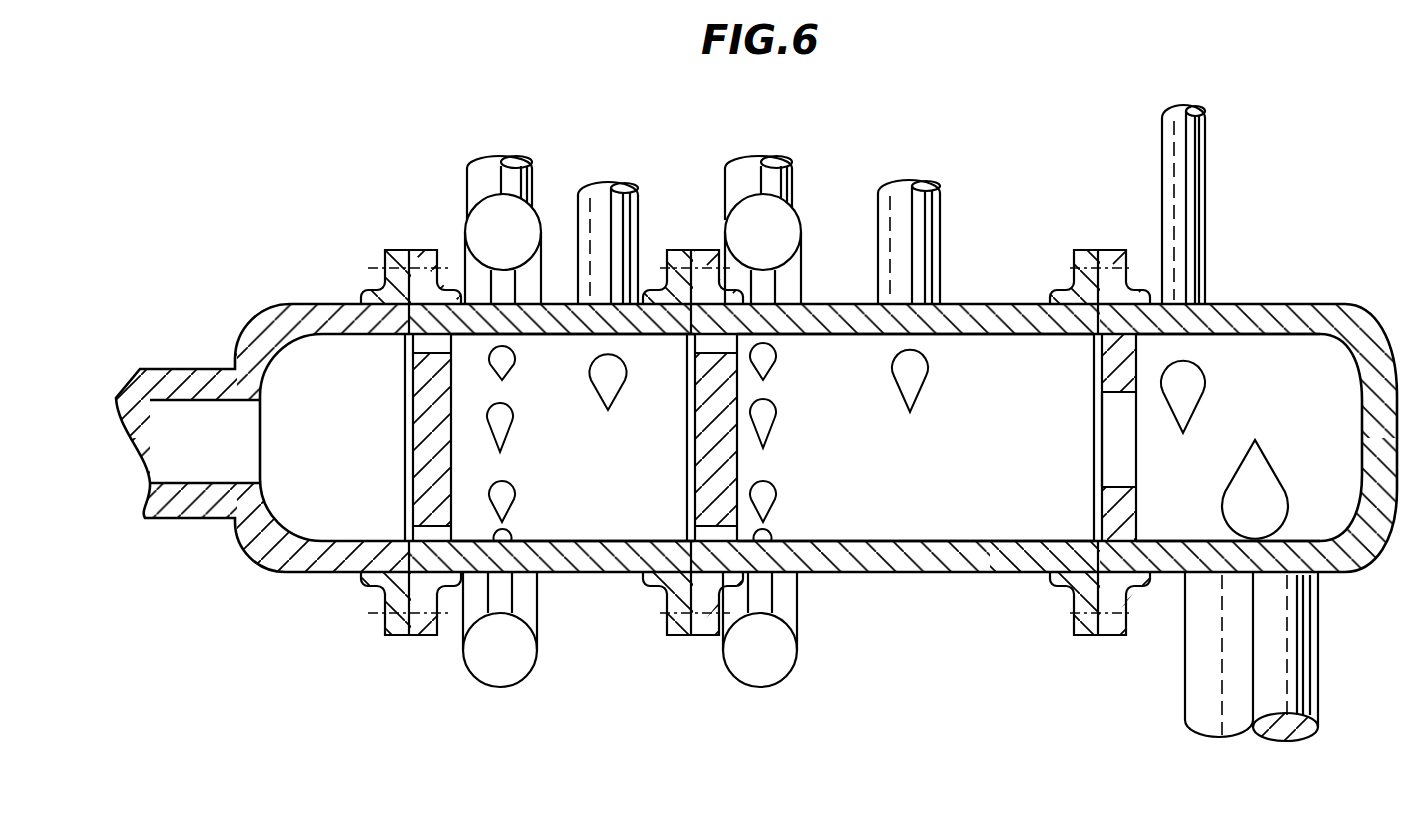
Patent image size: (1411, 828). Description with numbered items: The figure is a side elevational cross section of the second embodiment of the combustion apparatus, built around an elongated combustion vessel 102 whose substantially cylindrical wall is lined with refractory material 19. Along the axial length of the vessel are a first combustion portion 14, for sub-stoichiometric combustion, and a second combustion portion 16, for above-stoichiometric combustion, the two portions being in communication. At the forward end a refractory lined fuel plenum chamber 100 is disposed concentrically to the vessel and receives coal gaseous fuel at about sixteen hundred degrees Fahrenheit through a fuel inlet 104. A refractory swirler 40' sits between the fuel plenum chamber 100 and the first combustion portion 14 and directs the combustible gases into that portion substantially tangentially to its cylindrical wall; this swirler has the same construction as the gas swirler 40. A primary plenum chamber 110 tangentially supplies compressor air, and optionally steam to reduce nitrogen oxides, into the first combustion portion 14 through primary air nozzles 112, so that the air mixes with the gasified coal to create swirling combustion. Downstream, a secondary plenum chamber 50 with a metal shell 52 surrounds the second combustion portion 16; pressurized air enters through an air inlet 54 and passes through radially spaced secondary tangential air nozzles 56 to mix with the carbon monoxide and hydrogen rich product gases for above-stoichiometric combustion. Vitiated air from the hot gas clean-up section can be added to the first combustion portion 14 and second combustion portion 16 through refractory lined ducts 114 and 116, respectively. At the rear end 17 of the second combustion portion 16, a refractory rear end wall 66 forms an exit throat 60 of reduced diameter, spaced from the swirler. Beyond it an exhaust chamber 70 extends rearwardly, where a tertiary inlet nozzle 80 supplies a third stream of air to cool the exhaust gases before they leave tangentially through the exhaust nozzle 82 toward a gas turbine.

The first combustion portion 14 is at (562, 515).
The second combustion portion 16 is at (930, 490).
The rear end 17 is at (1085, 407).
The refractory material 19 is at (413, 630).
The gas swirler 40 is at (672, 442).
The refractory swirler 40' is at (371, 442).
The secondary plenum chamber 50 is at (757, 653).
The metal shell 52 is at (718, 600).
The air inlet 54 is at (775, 157).
The secondary tangential air nozzles 56 is at (764, 533).
The exit throat 60 is at (1110, 448).
The rear end wall 66 is at (1112, 513).
The exhaust chamber 70 is at (1200, 340).
The tertiary inlet nozzle 80 is at (1193, 225).
The exhaust nozzle 82 is at (1255, 495).
The fuel plenum chamber 100 is at (305, 500).
The elongated combustion vessel 102 is at (823, 580).
The fuel inlet 104 is at (155, 445).
The primary plenum chamber 110 is at (493, 663).
The primary air nozzles 112 is at (503, 533).
The refractory lined duct 114 is at (616, 250).
The refractory lined duct 116 is at (918, 258).